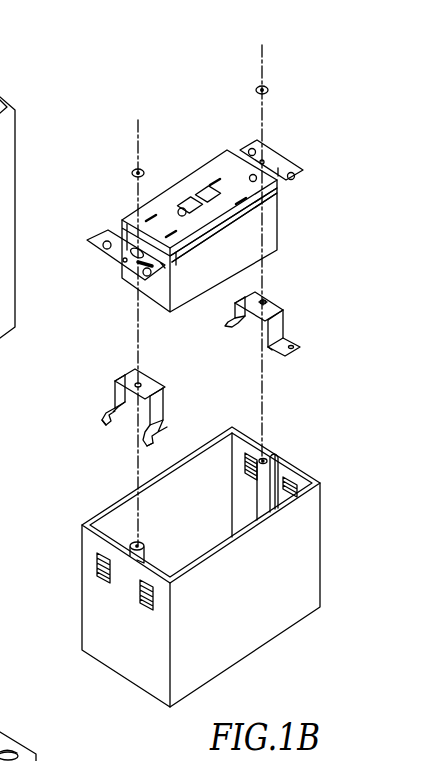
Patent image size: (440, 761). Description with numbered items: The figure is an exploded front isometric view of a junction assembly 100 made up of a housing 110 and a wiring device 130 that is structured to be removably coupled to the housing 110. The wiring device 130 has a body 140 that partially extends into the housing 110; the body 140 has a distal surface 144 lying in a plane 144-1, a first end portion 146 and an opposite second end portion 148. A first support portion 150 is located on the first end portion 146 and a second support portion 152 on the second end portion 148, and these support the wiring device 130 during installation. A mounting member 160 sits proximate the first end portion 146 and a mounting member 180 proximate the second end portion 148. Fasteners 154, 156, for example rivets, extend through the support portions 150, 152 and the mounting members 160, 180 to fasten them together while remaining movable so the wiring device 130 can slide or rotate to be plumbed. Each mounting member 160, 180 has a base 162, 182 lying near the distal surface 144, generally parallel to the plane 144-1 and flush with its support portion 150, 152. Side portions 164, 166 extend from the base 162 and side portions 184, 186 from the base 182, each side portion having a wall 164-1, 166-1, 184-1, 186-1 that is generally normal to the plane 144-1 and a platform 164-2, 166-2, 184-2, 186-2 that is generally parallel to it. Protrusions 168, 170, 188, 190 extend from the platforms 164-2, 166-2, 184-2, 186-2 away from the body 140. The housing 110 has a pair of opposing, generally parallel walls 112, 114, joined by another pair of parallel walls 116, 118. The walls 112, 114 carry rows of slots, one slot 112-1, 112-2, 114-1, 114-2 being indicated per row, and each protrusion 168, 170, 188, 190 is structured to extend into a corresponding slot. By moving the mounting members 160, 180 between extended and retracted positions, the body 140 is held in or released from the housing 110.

The junction assembly 100 is at (333, 55).
The housing 110 is at (169, 543).
The first wall 112 is at (108, 611).
The slot 112-1 is at (143, 577).
The slot 112-2 is at (97, 555).
The second wall 114 is at (240, 445).
The slot 114-1 is at (290, 447).
The slot 114-2 is at (262, 380).
The wall 116 is at (283, 613).
The wall 118 is at (110, 525).
The wiring device 130 is at (312, 197).
The body 140 is at (169, 420).
The distal surface 144 is at (182, 185).
The plane 144-1 is at (92, 243).
The first end portion 146 is at (180, 237).
The second end portion 148 is at (267, 176).
The first support portion 150 is at (170, 287).
The second support portion 152 is at (300, 167).
The fastener 154 is at (128, 168).
The fastener 156 is at (268, 78).
The mounting member 160 is at (126, 393).
The base 162 is at (138, 375).
The side portion 164 is at (175, 410).
The wall 164-1 is at (187, 370).
The platform 164-2 is at (170, 428).
The side portion 166 is at (102, 370).
The wall 166-1 is at (110, 378).
The platform 166-2 is at (110, 390).
The protrusion 168 is at (132, 458).
The protrusion 170 is at (97, 422).
The mounting member 180 is at (241, 330).
The base 182 is at (270, 298).
The side portion 184 is at (318, 282).
The wall 184-1 is at (278, 320).
The platform 184-2 is at (286, 343).
The side portion 186 is at (216, 316).
The wall 186-1 is at (262, 272).
The platform 186-2 is at (237, 313).
The protrusion 188 is at (288, 358).
The protrusion 190 is at (259, 336).